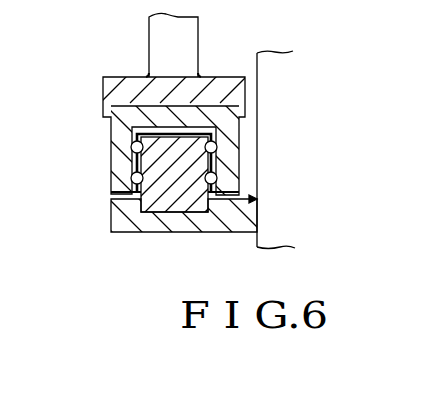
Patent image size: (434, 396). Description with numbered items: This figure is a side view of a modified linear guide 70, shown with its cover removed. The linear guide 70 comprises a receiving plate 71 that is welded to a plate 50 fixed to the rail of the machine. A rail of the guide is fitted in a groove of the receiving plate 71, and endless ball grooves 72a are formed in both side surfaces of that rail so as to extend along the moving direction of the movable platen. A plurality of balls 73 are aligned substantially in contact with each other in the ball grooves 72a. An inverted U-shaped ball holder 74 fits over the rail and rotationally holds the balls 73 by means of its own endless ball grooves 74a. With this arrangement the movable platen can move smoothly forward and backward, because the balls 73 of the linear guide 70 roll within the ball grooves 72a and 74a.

The plate 50 is at (255, 242).
The linear guide 70 is at (110, 180).
The receiving plate 71 is at (172, 232).
The endless ball grooves 72a is at (140, 180).
The balls 73 is at (131, 176).
The ball holder 74 is at (111, 132).
The endless ball grooves 74a is at (215, 146).